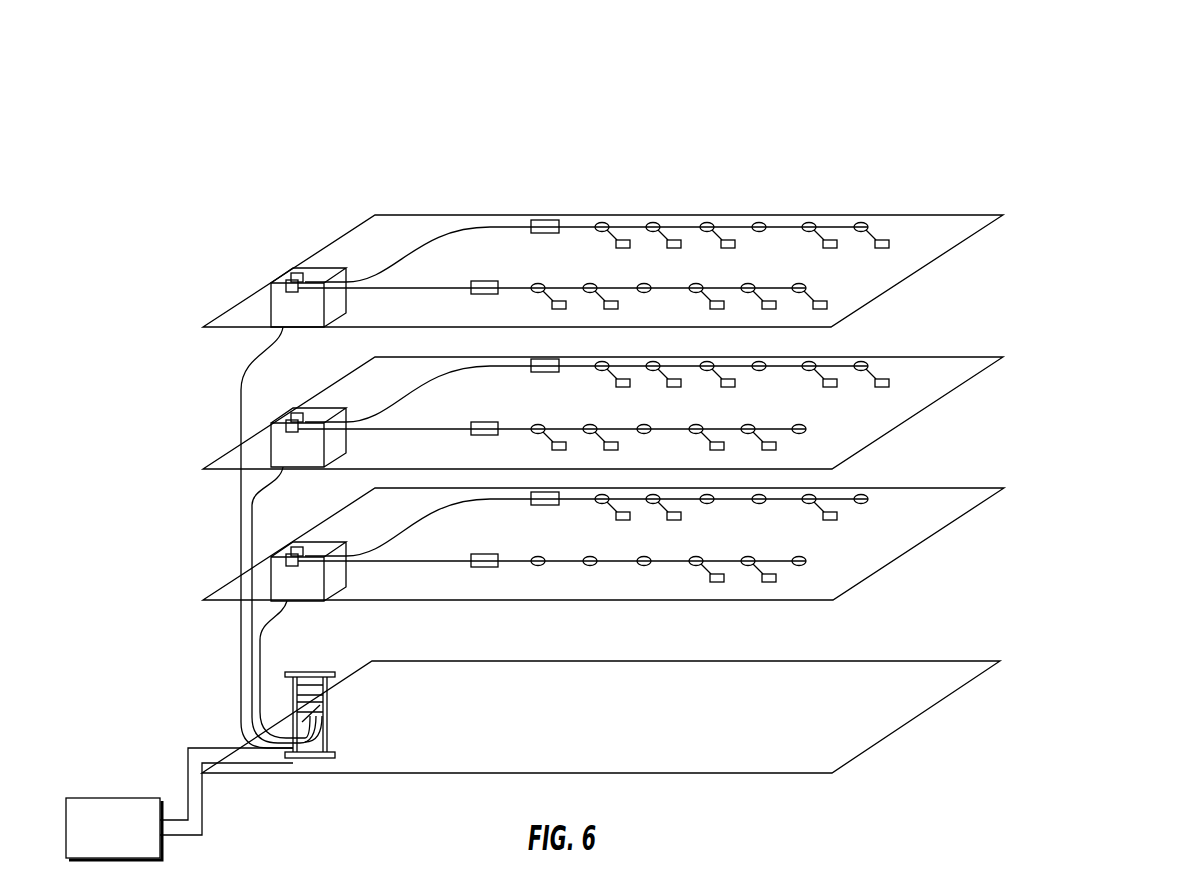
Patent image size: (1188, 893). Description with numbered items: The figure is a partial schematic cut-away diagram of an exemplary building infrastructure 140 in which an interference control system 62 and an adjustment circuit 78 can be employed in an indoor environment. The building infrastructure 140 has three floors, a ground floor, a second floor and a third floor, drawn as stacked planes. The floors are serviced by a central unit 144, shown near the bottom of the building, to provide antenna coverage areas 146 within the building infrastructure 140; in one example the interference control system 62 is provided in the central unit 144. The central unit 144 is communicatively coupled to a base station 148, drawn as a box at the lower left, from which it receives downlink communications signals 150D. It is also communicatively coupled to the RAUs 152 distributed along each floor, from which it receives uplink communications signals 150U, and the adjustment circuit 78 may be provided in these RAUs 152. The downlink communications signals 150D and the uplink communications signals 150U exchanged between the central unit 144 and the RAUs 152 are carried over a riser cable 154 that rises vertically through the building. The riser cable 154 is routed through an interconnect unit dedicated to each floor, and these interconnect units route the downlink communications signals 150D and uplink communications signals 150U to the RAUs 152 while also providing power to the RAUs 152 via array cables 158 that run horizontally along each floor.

The building infrastructure 140 is at (1087, 83).
The adjustment circuit 78 is at (732, 170).
The antenna coverage areas 146 is at (792, 340).
The array cables 158 is at (503, 226).
The RAUs 152 is at (835, 240).
The riser cable 154 is at (242, 652).
The uplink communications signals 150U is at (187, 746).
The downlink communications signals 150D is at (204, 836).
The base station 148 is at (128, 838).
The central unit 144 is at (335, 718).
The interference control system 62 is at (343, 739).